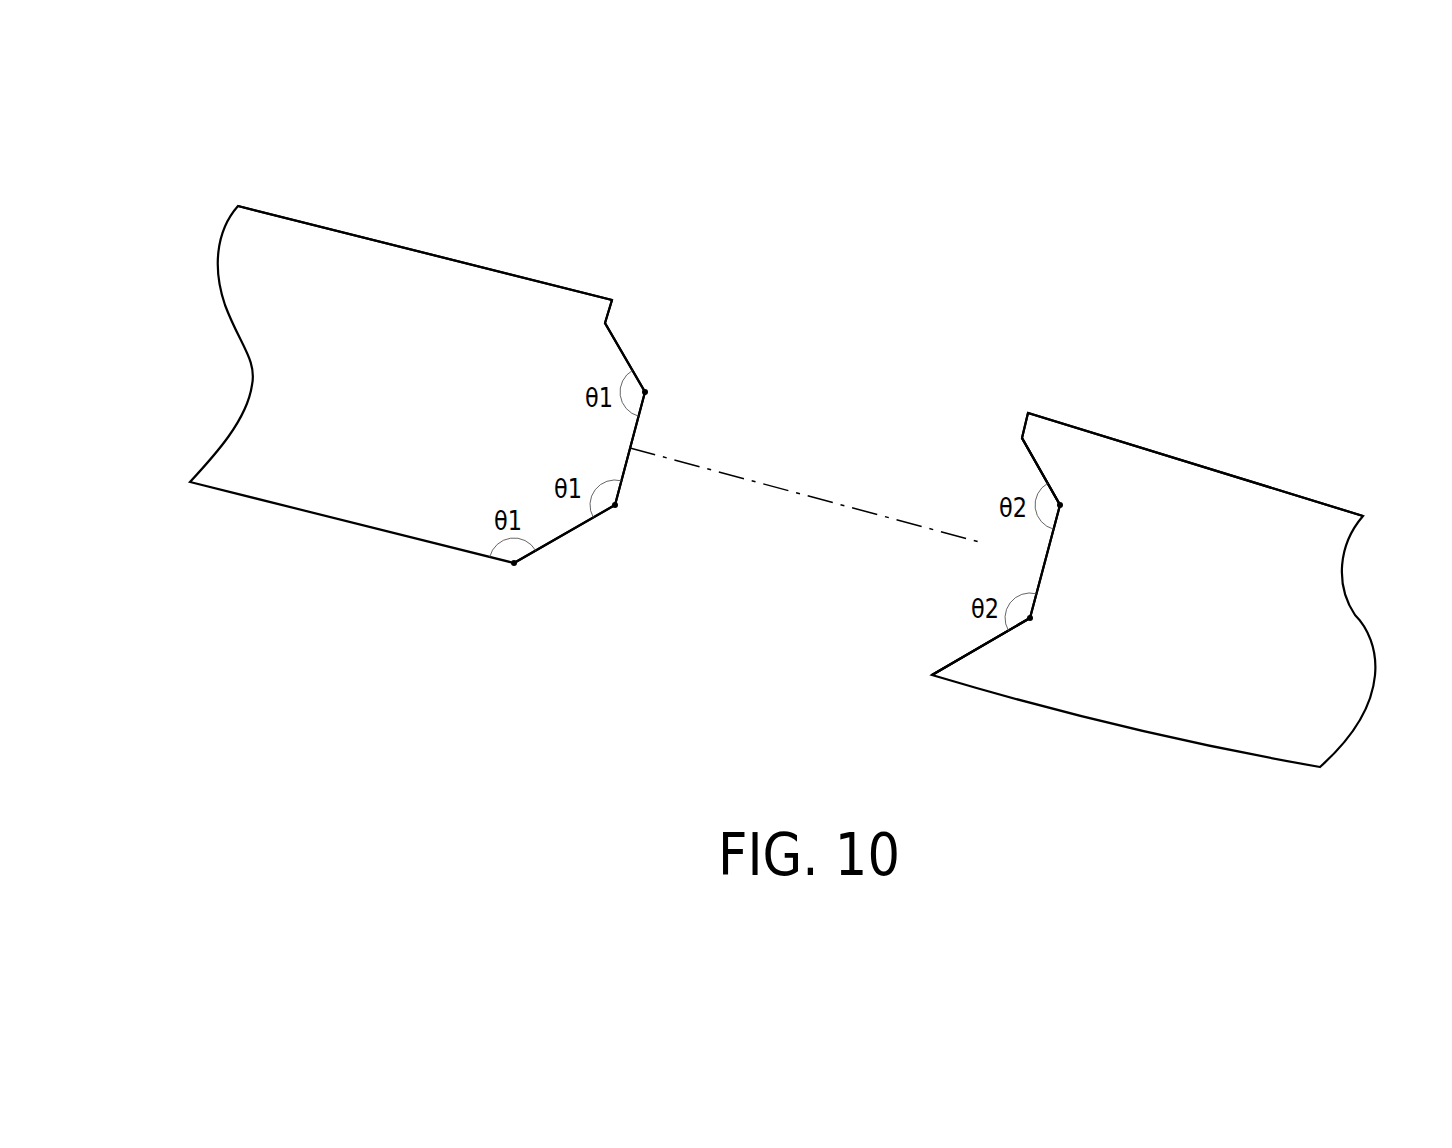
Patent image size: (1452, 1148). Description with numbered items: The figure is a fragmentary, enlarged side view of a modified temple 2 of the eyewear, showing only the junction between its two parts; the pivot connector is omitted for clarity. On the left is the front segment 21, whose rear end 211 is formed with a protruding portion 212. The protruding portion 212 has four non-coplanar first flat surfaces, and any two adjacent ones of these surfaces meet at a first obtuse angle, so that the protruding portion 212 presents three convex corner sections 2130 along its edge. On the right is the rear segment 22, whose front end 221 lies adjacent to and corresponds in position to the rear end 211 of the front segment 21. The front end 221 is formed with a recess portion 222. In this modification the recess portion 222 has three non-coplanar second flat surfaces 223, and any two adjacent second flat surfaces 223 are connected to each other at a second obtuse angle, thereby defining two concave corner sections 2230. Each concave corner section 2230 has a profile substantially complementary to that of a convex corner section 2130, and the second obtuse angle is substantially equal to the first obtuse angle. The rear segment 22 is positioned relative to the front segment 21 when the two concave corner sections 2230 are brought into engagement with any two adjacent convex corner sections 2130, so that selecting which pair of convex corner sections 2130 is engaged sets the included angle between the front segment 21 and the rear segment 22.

The temple 2 is at (1176, 268).
The front segment 21 is at (279, 249).
The rear end 211 is at (485, 335).
The protruding portion 212 is at (645, 331).
The convex corner section 2130 is at (645, 392).
The rear segment 22 is at (1292, 505).
The front end 221 is at (1132, 477).
The recess portion 222 is at (1042, 405).
The second flat surface 223 is at (1037, 465).
The concave corner section 2230 is at (1062, 505).